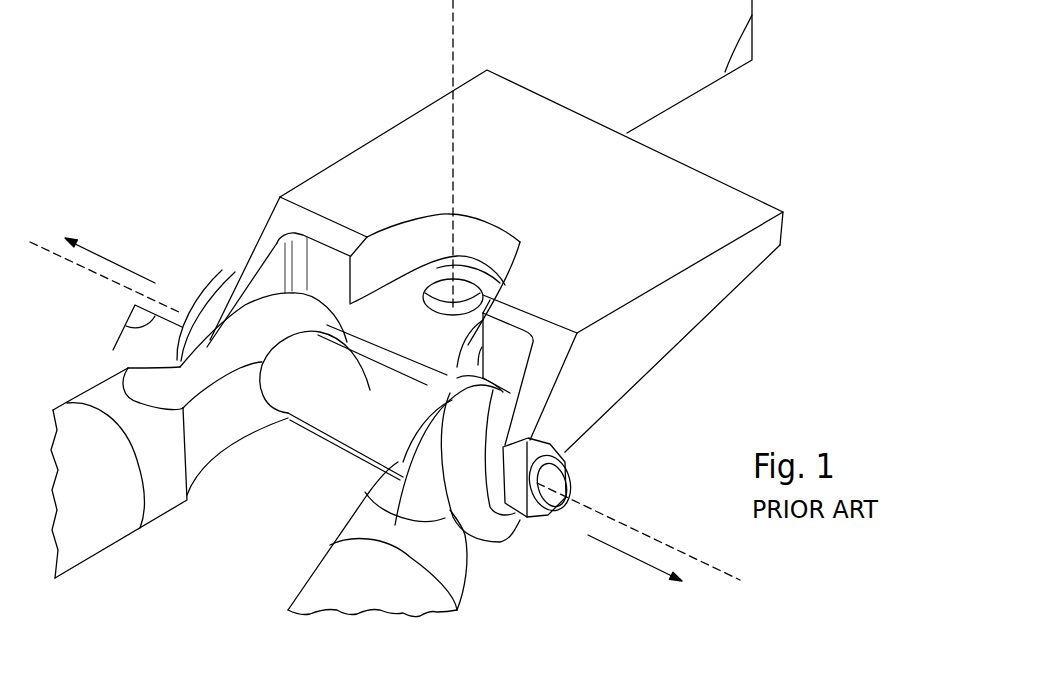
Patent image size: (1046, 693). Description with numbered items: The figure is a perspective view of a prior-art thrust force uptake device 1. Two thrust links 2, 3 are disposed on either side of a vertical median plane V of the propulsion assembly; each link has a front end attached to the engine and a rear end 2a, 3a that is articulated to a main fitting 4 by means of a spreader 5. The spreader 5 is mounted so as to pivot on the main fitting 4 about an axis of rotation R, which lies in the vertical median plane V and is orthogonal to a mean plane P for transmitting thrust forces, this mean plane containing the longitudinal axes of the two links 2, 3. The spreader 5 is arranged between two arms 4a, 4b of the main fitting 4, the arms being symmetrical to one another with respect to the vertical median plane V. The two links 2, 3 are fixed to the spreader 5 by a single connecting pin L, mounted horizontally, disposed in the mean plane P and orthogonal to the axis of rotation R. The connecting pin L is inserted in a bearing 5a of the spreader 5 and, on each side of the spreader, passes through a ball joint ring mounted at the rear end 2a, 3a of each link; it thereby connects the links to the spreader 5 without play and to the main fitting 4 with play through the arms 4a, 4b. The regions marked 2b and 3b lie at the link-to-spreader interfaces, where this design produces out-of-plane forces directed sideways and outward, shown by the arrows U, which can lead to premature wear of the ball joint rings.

The thrust force uptake device 1 is at (813, 192).
The thrust link 2 is at (75, 430).
The rear end 2a is at (253, 316).
The bushing of first arm 2b is at (268, 393).
The thrust link 3 is at (427, 597).
The rear end 3a is at (452, 442).
The bushing of second arm 3b is at (497, 391).
The main fitting 4 is at (392, 160).
The arm 4a is at (238, 282).
The arm 4b is at (517, 415).
The spreader 5 is at (365, 348).
The bearing 5a is at (355, 432).
The connecting pin L is at (540, 505).
The mean plane for transmitting thrust forces P is at (150, 326).
The axis of rotation R is at (453, 20).
The out-of-plane force arrows U is at (80, 246).
The vertical median plane V is at (728, 50).